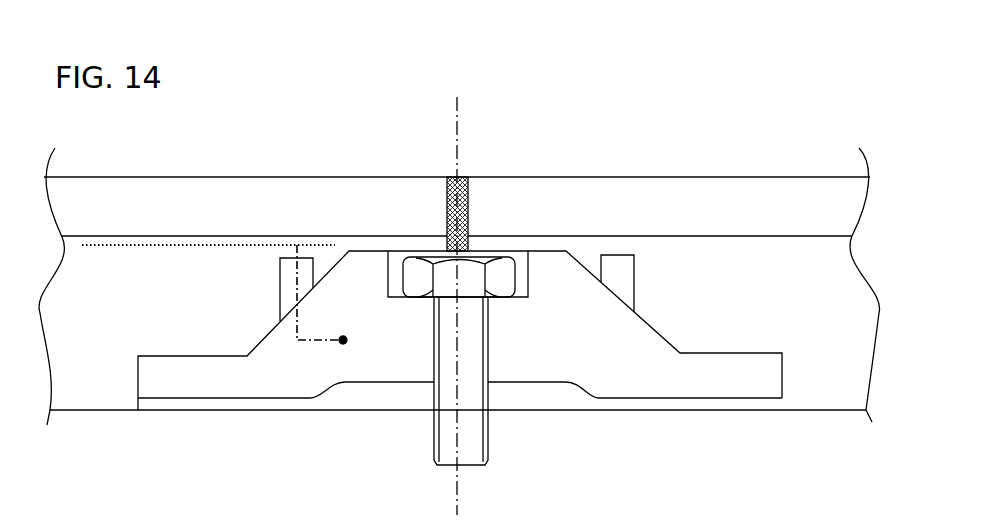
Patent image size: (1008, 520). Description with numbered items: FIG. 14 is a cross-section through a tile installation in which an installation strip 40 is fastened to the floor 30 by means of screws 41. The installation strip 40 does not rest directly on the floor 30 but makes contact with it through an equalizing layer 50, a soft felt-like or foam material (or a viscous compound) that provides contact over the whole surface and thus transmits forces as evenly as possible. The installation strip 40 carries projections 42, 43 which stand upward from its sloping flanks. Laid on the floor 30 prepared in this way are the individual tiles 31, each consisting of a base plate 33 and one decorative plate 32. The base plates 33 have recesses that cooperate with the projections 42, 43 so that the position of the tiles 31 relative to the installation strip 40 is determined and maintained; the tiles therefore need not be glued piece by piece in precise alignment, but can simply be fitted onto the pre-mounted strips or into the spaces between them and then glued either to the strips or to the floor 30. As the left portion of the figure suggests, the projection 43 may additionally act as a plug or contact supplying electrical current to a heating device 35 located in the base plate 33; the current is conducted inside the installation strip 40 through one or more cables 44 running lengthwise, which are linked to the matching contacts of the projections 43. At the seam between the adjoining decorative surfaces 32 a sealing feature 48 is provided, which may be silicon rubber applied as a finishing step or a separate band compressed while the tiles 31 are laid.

The floor 30 is at (526, 445).
The tile 31 is at (188, 130).
The decorative plate 32 is at (224, 222).
The base plate 33 is at (139, 310).
The heating device 35 is at (169, 246).
The installation strip 40 is at (546, 345).
The screw 41 is at (449, 343).
The projection 42 is at (626, 262).
The projection 43 is at (300, 263).
The cable 44 is at (313, 398).
The sealing feature 48 is at (471, 200).
The equalizing layer 50 is at (715, 402).